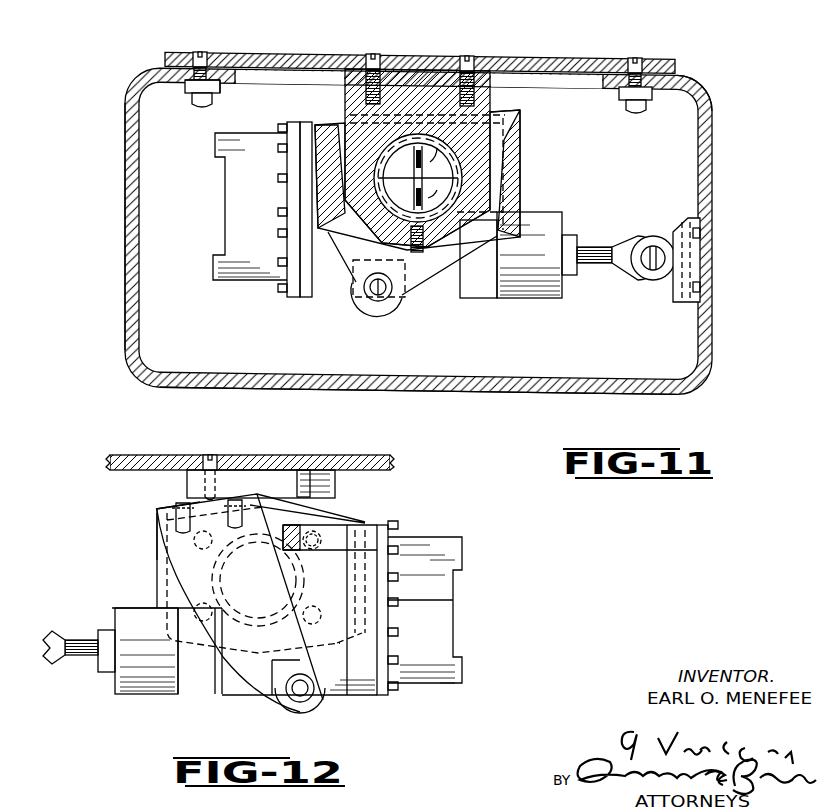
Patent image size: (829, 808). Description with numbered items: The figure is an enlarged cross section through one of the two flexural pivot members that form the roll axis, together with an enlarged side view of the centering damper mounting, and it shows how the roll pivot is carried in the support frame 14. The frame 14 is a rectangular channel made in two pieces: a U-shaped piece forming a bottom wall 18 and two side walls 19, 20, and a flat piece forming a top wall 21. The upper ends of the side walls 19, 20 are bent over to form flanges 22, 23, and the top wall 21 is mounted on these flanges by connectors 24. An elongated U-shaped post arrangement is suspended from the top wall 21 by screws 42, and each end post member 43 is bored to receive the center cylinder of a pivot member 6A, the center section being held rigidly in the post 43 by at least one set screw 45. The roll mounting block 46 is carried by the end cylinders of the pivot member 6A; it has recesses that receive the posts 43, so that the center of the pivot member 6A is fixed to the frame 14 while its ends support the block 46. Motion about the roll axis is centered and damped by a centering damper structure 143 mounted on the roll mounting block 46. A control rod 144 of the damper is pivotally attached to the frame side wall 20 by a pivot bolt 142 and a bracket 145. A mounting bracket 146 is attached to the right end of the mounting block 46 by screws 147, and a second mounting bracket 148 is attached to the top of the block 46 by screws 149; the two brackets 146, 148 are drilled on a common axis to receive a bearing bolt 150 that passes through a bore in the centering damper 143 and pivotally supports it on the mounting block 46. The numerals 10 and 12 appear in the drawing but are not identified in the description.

In FIG. 11, the pivot member 6A is at (458, 212).
In FIG. 11, the gauge ring 10 is at (433, 193).
In FIG. 11, the indicator assembly 12 is at (424, 160).
In FIG. 11, the support frame 14 is at (718, 71).
In FIG. 11, the bottom wall 18 is at (478, 393).
In FIG. 11, the side wall 19 is at (124, 226).
In FIG. 11, the side wall 20 is at (713, 172).
In FIG. 12, the side wall 20 is at (251, 468).
In FIG. 11, the top wall 21 is at (583, 56).
In FIG. 11, the flange 22 is at (228, 78).
In FIG. 11, the flange 23 is at (655, 101).
In FIG. 11, the connector 24 is at (201, 50).
In FIG. 11, the screw 42 is at (467, 56).
In FIG. 11, the end post member 43 is at (491, 87).
In FIG. 12, the end post member 43 is at (187, 484).
In FIG. 11, the set screw 45 is at (417, 254).
In FIG. 11, the roll mounting block 46 is at (530, 167).
In FIG. 12, the roll mounting block 46 is at (275, 492).
In FIG. 11, the pivot bolt 142 is at (661, 265).
In FIG. 11, the centering damper structure 143 is at (550, 207).
In FIG. 12, the centering damper structure 143 is at (416, 528).
In FIG. 11, the control rod 144 is at (598, 270).
In FIG. 12, the control rod 144 is at (82, 656).
In FIG. 11, the bracket 145 is at (668, 224).
In FIG. 11, the mounting bracket 146 is at (345, 255).
In FIG. 12, the mounting bracket 146 is at (283, 528).
In FIG. 12, the screw 147 is at (322, 537).
In FIG. 11, the second mounting bracket 148 is at (523, 108).
In FIG. 12, the second mounting bracket 148 is at (157, 515).
In FIG. 12, the screw 149 is at (175, 506).
In FIG. 11, the bearing bolt 150 is at (372, 290).
In FIG. 12, the bearing bolt 150 is at (298, 690).